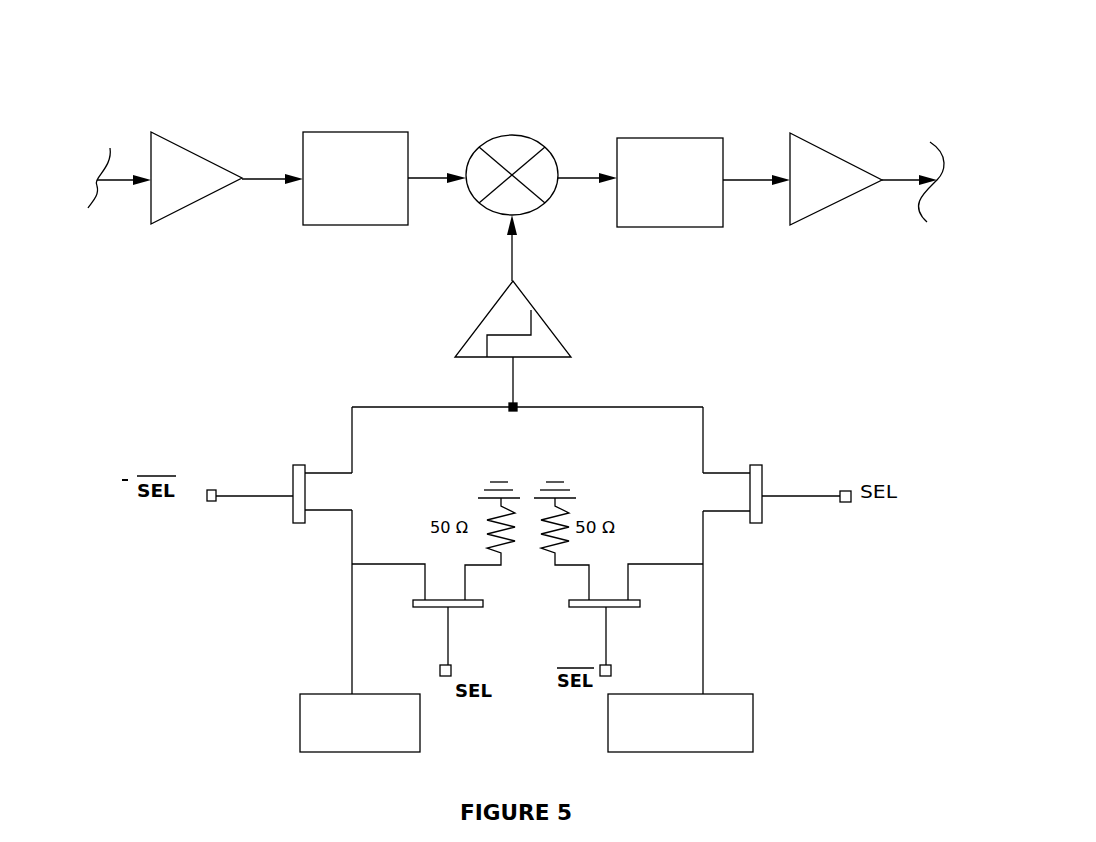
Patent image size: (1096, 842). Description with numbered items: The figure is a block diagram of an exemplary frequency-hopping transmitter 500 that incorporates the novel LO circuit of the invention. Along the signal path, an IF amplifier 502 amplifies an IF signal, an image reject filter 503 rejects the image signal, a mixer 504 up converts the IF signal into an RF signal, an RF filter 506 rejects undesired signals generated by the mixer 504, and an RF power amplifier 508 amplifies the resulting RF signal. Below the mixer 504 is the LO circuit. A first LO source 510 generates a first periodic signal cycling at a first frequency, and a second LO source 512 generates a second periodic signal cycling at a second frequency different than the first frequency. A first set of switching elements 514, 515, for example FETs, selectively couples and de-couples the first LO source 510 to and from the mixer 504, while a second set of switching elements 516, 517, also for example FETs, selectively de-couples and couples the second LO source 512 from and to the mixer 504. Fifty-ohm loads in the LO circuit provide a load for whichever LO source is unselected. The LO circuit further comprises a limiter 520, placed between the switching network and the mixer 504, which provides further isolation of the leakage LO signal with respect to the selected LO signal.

The frequency-hopping transmitter 500 is at (607, 55).
The IF amplifier 502 is at (178, 143).
The image reject filter 503 is at (343, 132).
The mixer 504 is at (517, 135).
The RF filter 506 is at (647, 138).
The RF power amplifier 508 is at (808, 145).
The first LO source 510 is at (322, 694).
The second LO source 512 is at (747, 695).
The first set of switching elements 514 is at (299, 465).
The first set of switching elements 515 is at (483, 605).
The second set of switching elements 516 is at (757, 465).
The second set of switching elements 517 is at (640, 607).
The limiter 520 is at (538, 320).